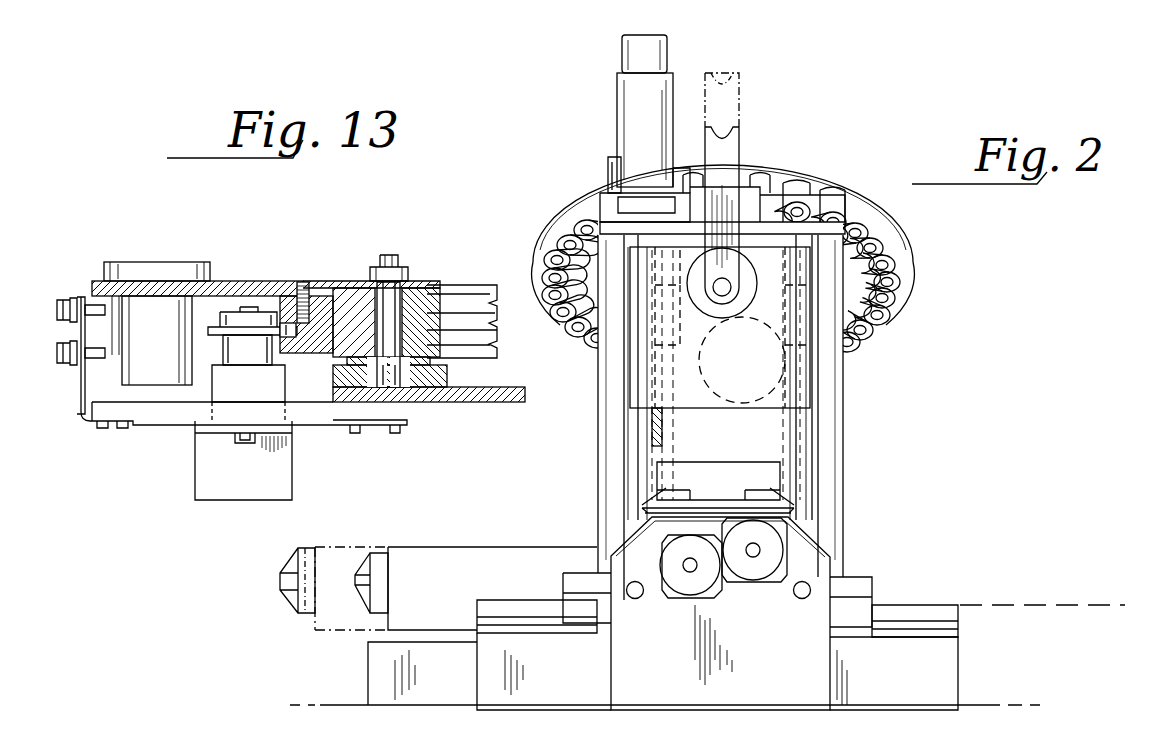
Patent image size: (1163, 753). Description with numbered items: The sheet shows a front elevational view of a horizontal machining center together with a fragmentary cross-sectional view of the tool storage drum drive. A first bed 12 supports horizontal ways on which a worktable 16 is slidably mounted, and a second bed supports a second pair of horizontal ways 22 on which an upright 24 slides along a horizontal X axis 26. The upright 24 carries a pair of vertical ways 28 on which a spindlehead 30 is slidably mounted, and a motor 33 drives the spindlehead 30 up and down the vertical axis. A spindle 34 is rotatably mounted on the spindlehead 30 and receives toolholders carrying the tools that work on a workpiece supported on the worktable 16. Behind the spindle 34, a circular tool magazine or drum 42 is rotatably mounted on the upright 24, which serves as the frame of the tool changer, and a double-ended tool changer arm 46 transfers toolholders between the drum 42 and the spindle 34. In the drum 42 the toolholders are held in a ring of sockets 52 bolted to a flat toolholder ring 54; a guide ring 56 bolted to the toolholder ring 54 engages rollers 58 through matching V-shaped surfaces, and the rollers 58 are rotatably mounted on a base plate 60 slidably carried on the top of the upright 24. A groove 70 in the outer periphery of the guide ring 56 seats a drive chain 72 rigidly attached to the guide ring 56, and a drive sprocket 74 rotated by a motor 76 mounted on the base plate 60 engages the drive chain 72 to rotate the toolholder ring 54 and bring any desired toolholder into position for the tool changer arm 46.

In FIG. 2, the first bed 12 is at (779, 642).
In FIG. 2, the worktable 16 is at (732, 447).
In FIG. 2, the second pair of horizontal ways 22 is at (500, 603).
In FIG. 2, the upright 24 is at (833, 501).
In FIG. 2, the X axis 26 is at (1058, 605).
In FIG. 2, the vertical ways 28 is at (636, 458).
In FIG. 2, the spindlehead 30 is at (688, 383).
In FIG. 2, the motor 33 is at (633, 110).
In FIG. 2, the spindle 34 is at (746, 292).
In FIG. 13, the tool magazine or drum 42 is at (226, 271).
In FIG. 2, the tool magazine or drum 42 is at (940, 268).
In FIG. 2, the double-ended tool changer arm 46 is at (740, 150).
In FIG. 13, the sockets 52 is at (134, 356).
In FIG. 2, the sockets 52 is at (545, 255).
In FIG. 13, the toolholder ring 54 is at (240, 281).
In FIG. 2, the toolholder ring 54 is at (598, 188).
In FIG. 13, the guide ring 56 is at (328, 300).
In FIG. 13, the rollers 58 is at (425, 300).
In FIG. 13, the base plate 60 is at (486, 403).
In FIG. 13, the groove 70 is at (293, 350).
In FIG. 13, the drive chain 72 is at (280, 300).
In FIG. 13, the drive sprocket 74 is at (211, 330).
In FIG. 13, the motor 76 is at (253, 388).